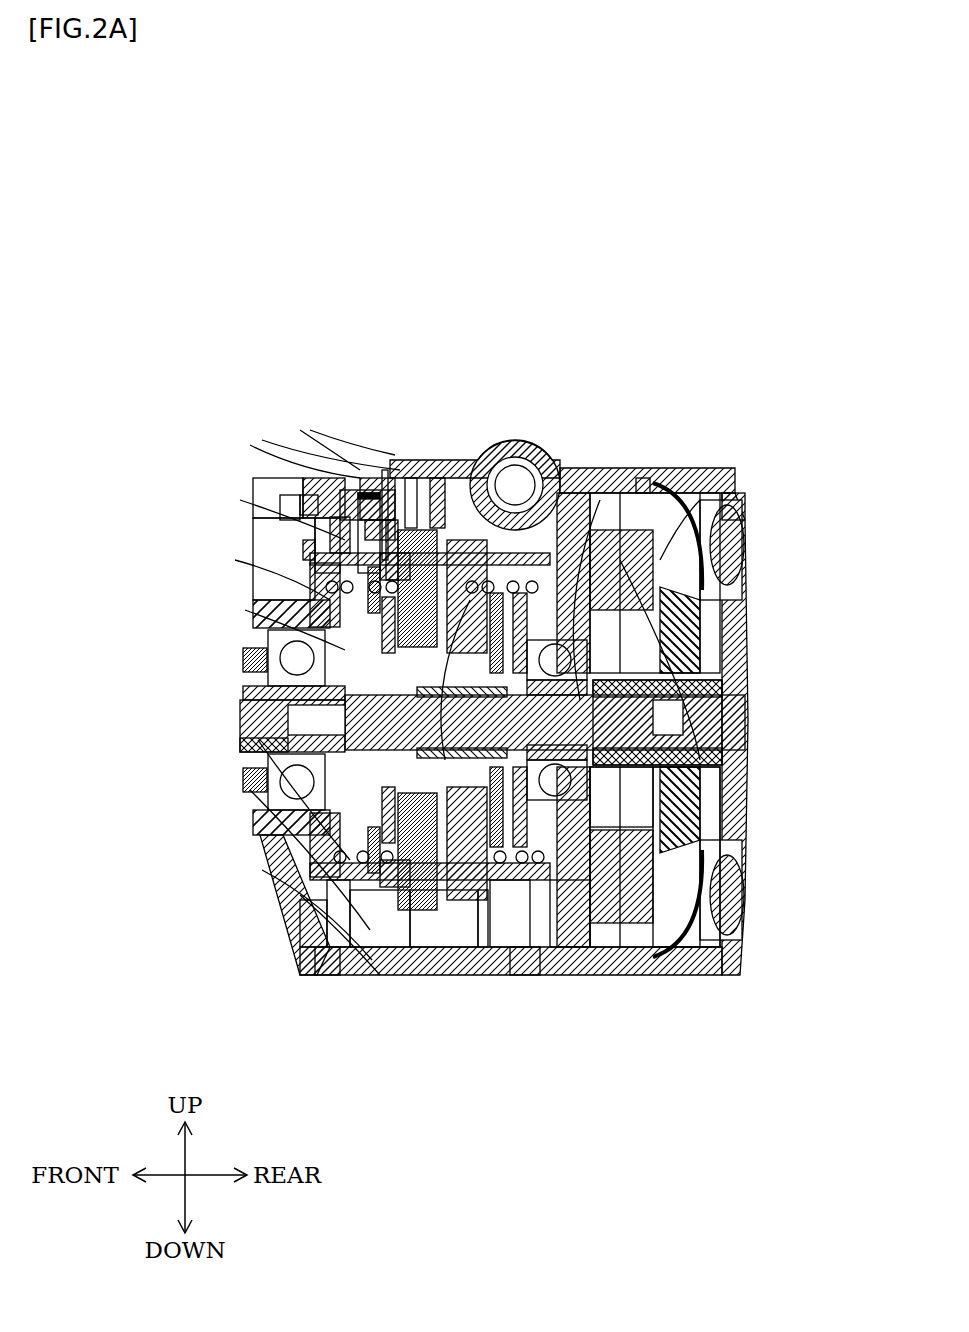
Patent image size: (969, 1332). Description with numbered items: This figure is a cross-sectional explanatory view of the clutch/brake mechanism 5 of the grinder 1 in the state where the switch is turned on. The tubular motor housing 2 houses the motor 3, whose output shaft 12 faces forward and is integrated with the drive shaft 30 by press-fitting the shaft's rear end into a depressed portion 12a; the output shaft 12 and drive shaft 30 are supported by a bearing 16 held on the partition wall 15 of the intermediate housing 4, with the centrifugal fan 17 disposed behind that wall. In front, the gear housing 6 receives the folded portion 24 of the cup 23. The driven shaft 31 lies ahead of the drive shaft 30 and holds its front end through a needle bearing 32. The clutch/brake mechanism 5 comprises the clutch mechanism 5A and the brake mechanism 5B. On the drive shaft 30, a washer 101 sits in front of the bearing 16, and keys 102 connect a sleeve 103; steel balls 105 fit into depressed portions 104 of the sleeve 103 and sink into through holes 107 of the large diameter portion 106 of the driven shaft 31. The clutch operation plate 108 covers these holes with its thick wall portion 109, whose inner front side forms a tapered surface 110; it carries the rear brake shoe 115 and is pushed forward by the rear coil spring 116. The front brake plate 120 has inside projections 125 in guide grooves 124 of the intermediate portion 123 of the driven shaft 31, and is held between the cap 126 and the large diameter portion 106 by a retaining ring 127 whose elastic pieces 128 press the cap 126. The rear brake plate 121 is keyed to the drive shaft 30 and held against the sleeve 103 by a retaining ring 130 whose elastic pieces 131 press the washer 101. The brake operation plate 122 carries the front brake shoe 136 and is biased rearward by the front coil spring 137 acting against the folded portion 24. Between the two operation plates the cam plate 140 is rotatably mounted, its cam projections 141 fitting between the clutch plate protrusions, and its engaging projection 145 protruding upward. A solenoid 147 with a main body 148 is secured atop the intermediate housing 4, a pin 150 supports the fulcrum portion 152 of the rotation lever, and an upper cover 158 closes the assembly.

The grinder 1 is at (677, 428).
The motor housing 2 is at (745, 480).
The motor 3 is at (736, 468).
The intermediate housing 4 is at (645, 468).
The clutch/brake mechanism 5 is at (380, 470).
The clutch mechanism 5A is at (467, 540).
The brake mechanism 5B is at (320, 945).
The gear housing 6 is at (318, 482).
The output shaft 12 is at (715, 716).
The depressed portion 12a is at (725, 712).
The partition wall 15 is at (660, 560).
The bearing 16 is at (692, 650).
The centrifugal fan 17 is at (746, 530).
The cup 23 is at (288, 505).
The folded portion 24 is at (300, 905).
The drive shaft 30 is at (722, 707).
The driven shaft 31 is at (240, 715).
The needle bearing 32 is at (243, 742).
The washer 101 is at (632, 500).
The key 102 is at (722, 692).
The sleeve 103 is at (415, 947).
The depressed portion 104 is at (498, 446).
The steel ball 105 is at (411, 478).
The large diameter portion 106 is at (390, 955).
The through hole 107 is at (438, 960).
The clutch operation plate 108 is at (438, 478).
The thick wall portion 109 is at (500, 960).
The tapered surface 110 is at (243, 691).
The rear brake shoe 115 is at (565, 960).
The rear coil spring 116 is at (600, 960).
The front brake plate 120 is at (338, 485).
The rear brake plate 121 is at (565, 493).
The brake operation plate 122 is at (362, 495).
The intermediate portion 123 is at (245, 668).
The guide groove 124 is at (252, 640).
The inside projection 125 is at (270, 830).
The cap 126 is at (256, 605).
The retaining ring 127 is at (312, 950).
The elastic piece 128 is at (272, 565).
The retaining ring 130 is at (637, 960).
The elastic piece 131 is at (603, 468).
The front brake shoe 136 is at (340, 958).
The front coil spring 137 is at (275, 535).
The cam plate 140 is at (405, 512).
The cam projection 141 is at (389, 520).
The engaging projection 145 is at (368, 492).
The solenoid 147 is at (507, 414).
The main body 148 is at (515, 445).
The pin 150 is at (345, 490).
The fulcrum portion 152 is at (302, 500).
The upper cover 158 is at (530, 455).